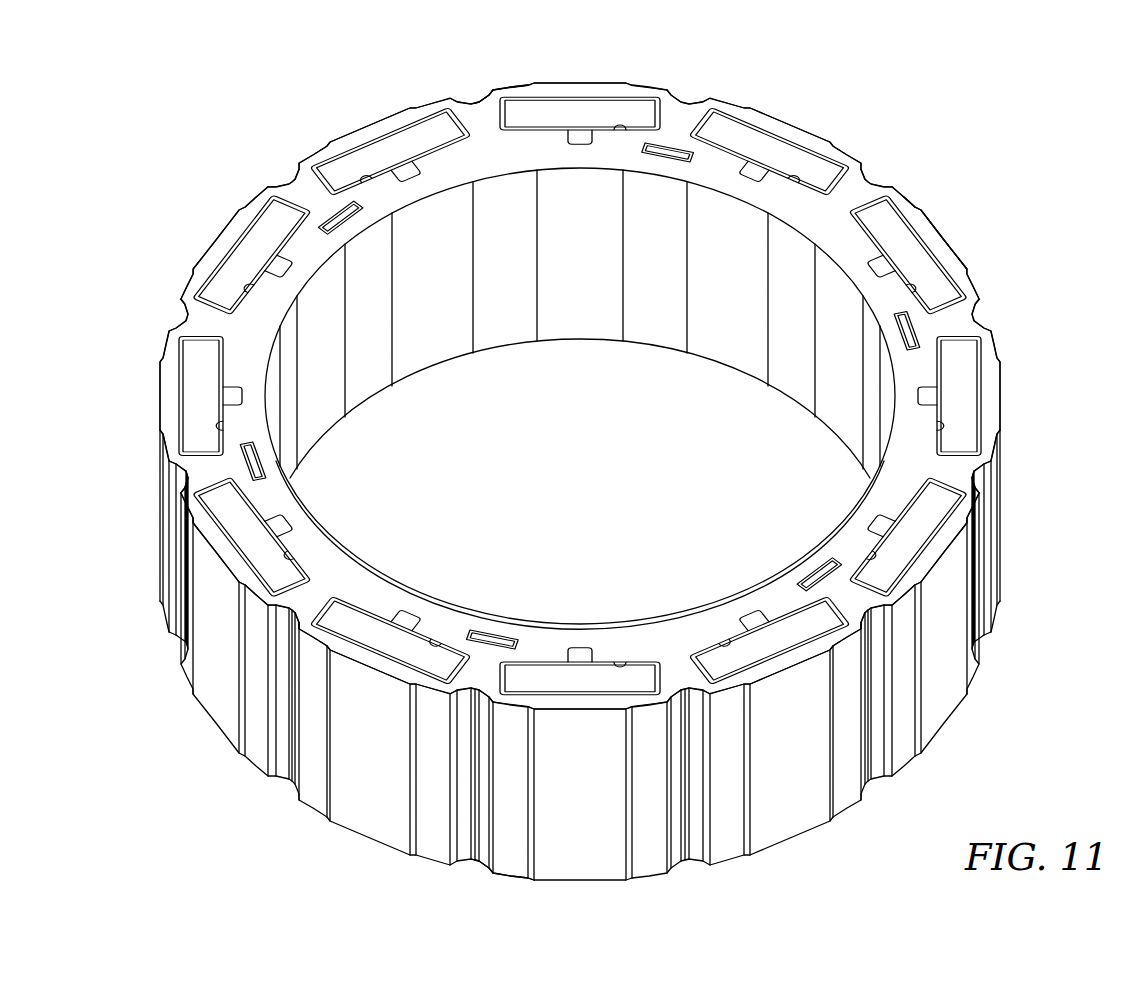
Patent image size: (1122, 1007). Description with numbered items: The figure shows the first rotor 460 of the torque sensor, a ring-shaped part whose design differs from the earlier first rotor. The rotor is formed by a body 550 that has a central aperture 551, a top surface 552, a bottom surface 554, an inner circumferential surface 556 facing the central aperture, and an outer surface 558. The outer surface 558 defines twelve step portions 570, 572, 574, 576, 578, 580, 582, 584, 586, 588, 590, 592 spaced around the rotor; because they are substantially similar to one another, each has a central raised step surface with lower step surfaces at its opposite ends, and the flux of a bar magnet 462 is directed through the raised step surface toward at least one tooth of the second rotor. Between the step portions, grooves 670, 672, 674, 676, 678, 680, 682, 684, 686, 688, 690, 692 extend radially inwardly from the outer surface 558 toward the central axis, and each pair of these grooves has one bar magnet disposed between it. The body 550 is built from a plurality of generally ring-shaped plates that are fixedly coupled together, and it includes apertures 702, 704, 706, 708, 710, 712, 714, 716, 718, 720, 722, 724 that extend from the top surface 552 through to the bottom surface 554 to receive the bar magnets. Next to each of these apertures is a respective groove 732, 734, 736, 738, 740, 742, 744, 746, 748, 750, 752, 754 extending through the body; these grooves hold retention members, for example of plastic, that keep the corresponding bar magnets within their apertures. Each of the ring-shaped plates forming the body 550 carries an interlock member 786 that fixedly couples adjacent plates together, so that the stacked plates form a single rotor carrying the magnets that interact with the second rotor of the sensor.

The first rotor 460 is at (872, 123).
The bar magnet 462 is at (700, 138).
The body 550 is at (863, 150).
The central aperture 551 is at (487, 108).
The top surface 552 is at (962, 268).
The bottom surface 554 is at (505, 882).
The inner circumferential surface 556 is at (557, 320).
The outer surface 558 is at (798, 823).
The step portion 570 is at (790, 130).
The step portion 572 is at (935, 235).
The step portion 574 is at (995, 392).
The step portion 576 is at (950, 542).
The step portion 578 is at (785, 665).
The step portion 580 is at (582, 705).
The step portion 582 is at (382, 668).
The step portion 584 is at (215, 550).
The step portion 586 is at (165, 393).
The step portion 588 is at (215, 250).
The step portion 590 is at (358, 145).
The step portion 592 is at (570, 92).
The groove 670 is at (880, 182).
The groove 672 is at (985, 316).
The groove 674 is at (985, 472).
The groove 676 is at (905, 612).
The groove 678 is at (700, 690).
The groove 680 is at (475, 700).
The groove 682 is at (295, 612).
The groove 684 is at (170, 470).
The groove 686 is at (168, 322).
The groove 688 is at (282, 182).
The groove 690 is at (462, 97).
The groove 692 is at (692, 104).
The aperture 702 is at (790, 182).
The aperture 704 is at (905, 290).
The aperture 706 is at (945, 428).
The aperture 708 is at (866, 553).
The aperture 710 is at (722, 640).
The aperture 712 is at (615, 660).
The aperture 714 is at (432, 638).
The aperture 716 is at (293, 553).
The aperture 718 is at (226, 428).
The aperture 720 is at (254, 290).
The aperture 722 is at (360, 178).
The aperture 724 is at (620, 124).
The groove 732 is at (750, 172).
The groove 734 is at (878, 268).
The groove 736 is at (922, 394).
The groove 738 is at (878, 524).
The groove 740 is at (748, 615).
The groove 742 is at (578, 648).
The groove 744 is at (410, 618).
The groove 746 is at (283, 522).
The groove 748 is at (240, 394).
The groove 750 is at (283, 268).
The groove 752 is at (410, 176).
The groove 754 is at (578, 147).
The interlock member 786 is at (262, 462).